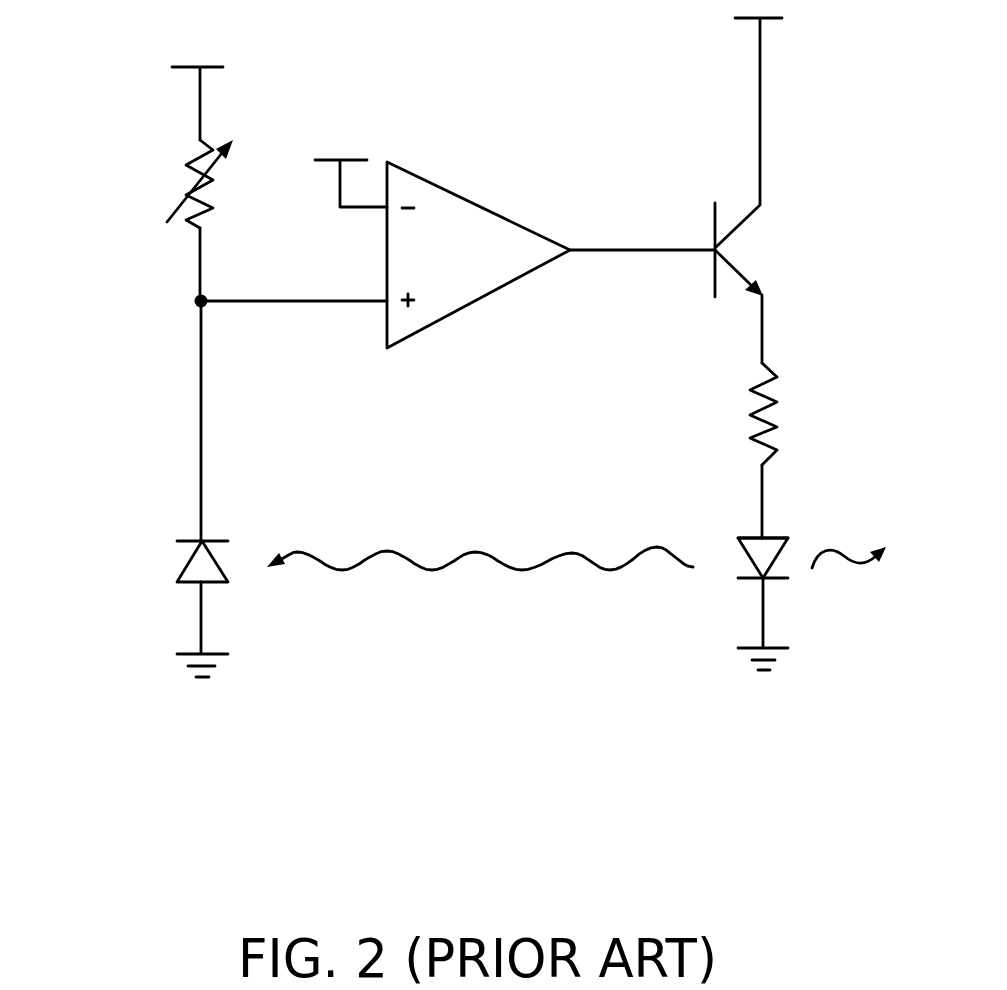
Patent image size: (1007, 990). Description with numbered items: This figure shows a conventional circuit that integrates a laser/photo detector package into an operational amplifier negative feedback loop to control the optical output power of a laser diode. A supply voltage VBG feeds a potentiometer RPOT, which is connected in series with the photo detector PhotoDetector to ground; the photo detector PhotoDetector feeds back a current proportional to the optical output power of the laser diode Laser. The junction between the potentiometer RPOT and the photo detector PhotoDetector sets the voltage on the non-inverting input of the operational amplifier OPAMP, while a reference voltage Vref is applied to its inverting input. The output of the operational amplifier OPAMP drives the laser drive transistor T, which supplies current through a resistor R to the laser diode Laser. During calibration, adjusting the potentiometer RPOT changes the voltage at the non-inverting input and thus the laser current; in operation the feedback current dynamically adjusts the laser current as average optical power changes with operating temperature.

The supply voltage VBG is at (197, 82).
The potentiometer RPOT is at (158, 184).
The reference voltage Vref is at (345, 163).
The operational amplifier OPAMP is at (551, 255).
The laser drive transistor T is at (750, 157).
The resistor R is at (778, 414).
The laser diode Laser is at (812, 604).
The photo detector PhotoDetector is at (128, 603).